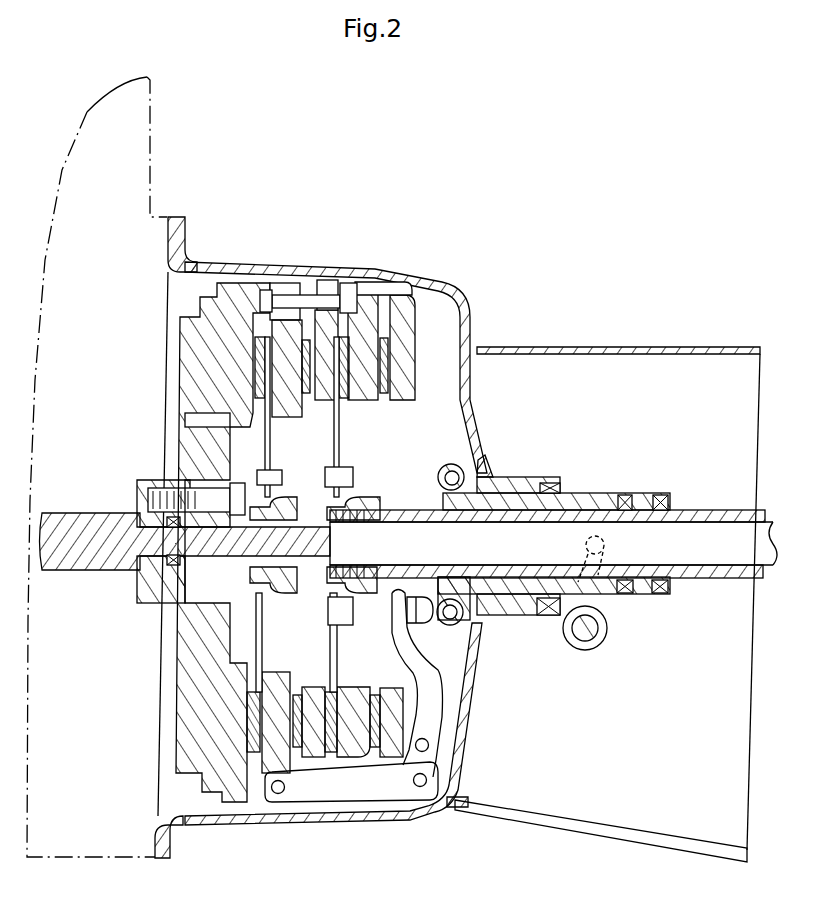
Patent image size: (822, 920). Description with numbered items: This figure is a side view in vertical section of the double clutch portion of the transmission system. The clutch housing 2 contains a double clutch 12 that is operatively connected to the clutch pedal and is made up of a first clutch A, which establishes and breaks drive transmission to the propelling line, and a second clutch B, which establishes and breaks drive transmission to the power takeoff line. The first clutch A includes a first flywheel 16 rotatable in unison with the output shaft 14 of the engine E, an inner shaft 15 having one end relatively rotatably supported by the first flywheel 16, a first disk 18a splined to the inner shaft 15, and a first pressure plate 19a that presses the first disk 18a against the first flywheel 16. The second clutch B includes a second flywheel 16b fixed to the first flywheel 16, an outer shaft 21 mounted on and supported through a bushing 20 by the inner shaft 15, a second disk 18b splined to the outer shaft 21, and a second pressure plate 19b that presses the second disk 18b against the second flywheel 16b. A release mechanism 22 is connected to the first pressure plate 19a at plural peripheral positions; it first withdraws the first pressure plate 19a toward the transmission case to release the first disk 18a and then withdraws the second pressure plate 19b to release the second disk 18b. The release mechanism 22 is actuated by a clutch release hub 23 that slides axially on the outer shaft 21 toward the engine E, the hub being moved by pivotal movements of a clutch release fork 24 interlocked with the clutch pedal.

The clutch housing 2 is at (468, 310).
The double clutch 12 is at (431, 310).
The output shaft 14 is at (98, 512).
The inner shaft 15 is at (718, 535).
The first flywheel 16 is at (180, 320).
The second flywheel 16b is at (318, 750).
The first disk 18a is at (267, 438).
The second disk 18b is at (343, 448).
The first pressure plate 19a is at (264, 697).
The second pressure plate 19b is at (340, 760).
The bushing 20 is at (352, 563).
The outer shaft 21 is at (720, 578).
The release mechanism 22 is at (460, 640).
The clutch release hub 23 is at (603, 493).
The clutch release fork 24 is at (606, 632).
The first clutch A is at (257, 765).
The second clutch B is at (332, 765).
The engine E is at (152, 138).